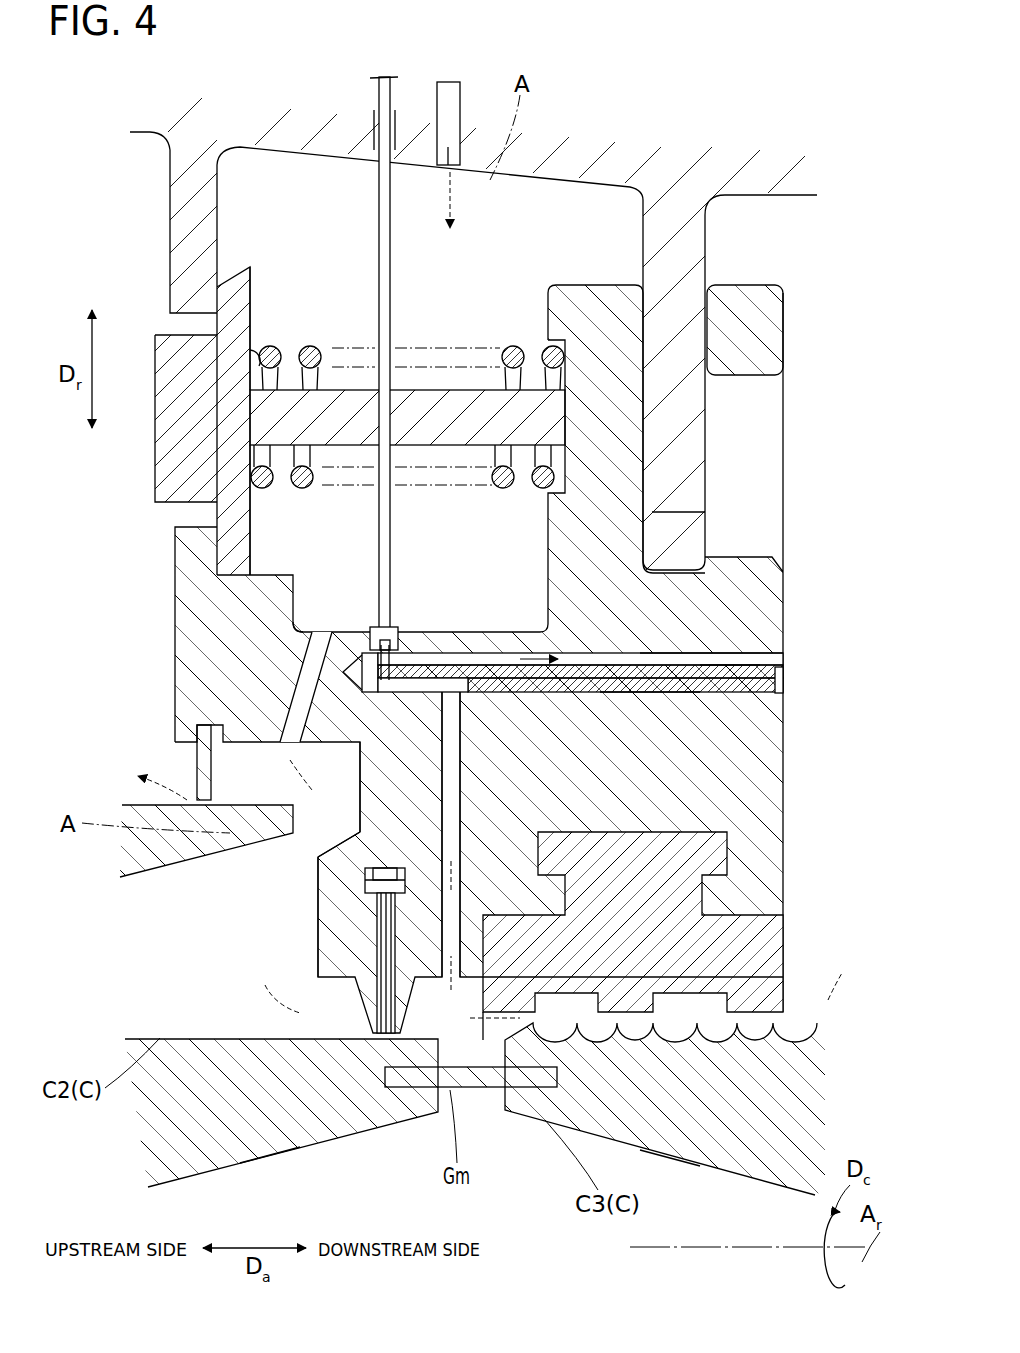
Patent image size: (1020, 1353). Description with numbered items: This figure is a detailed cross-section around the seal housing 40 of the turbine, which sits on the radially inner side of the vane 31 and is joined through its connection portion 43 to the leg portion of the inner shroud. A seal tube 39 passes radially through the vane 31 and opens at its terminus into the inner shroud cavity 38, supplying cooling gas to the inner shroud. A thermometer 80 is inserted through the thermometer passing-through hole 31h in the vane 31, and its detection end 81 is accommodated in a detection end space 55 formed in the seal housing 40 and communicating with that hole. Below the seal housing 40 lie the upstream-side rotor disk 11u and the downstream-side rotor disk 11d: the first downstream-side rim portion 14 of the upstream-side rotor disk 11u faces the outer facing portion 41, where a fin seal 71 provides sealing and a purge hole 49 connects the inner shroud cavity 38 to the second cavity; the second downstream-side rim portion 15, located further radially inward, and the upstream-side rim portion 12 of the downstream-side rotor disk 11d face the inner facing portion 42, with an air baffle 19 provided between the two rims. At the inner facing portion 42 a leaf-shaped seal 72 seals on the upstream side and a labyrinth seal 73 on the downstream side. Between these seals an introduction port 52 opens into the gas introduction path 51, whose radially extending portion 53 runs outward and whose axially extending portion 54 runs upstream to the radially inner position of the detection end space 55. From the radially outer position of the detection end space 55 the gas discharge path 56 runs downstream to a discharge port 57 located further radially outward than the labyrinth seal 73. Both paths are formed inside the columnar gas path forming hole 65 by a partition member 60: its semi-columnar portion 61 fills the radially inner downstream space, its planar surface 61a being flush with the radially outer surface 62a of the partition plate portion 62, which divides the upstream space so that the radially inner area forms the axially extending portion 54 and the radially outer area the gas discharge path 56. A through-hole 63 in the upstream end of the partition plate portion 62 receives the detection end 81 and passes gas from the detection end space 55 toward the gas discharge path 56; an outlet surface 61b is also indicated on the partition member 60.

The vane 31 is at (537, 150).
The thermometer passing-through hole 31h is at (376, 114).
The inner shroud cavity 38 is at (510, 265).
The seal tube 39 is at (461, 105).
The seal housing 40 is at (765, 790).
The outer facing portion 41 is at (195, 763).
The inner facing portion 42 is at (440, 1085).
The connection portion 43 is at (625, 400).
The purge hole 49 is at (320, 640).
The gas introduction path 51 is at (248, 870).
The introduction port 52 is at (458, 1050).
The radially extending portion 53 is at (316, 925).
The axially extending portion 54 is at (316, 858).
The detection end space 55 is at (345, 713).
The gas discharge path 56 is at (735, 655).
The discharge port 57 is at (790, 657).
The partition member 60 is at (790, 680).
The semi-columnar portion 61 is at (650, 645).
The planar surface 61a is at (660, 560).
The passage outlet 61b is at (700, 700).
The partition plate portion 62 is at (380, 660).
The radially outer surface 62a is at (400, 640).
The through-hole 63 is at (300, 690).
The gas path forming hole 65 is at (735, 640).
The fin seal 71 is at (193, 780).
The leaf-shaped seal 72 is at (382, 1040).
The labyrinth seal 73 is at (760, 940).
The thermometer 80 is at (394, 112).
The detection end 81 is at (385, 648).
The upstream-side rotor disk 11u is at (165, 1118).
The downstream-side rotor disk 11d is at (770, 1095).
The upstream-side rim portion 12 is at (658, 1138).
The first downstream-side rim portion 14 is at (152, 845).
The second downstream-side rim portion 15 is at (270, 1150).
The air baffle 19 is at (492, 1075).